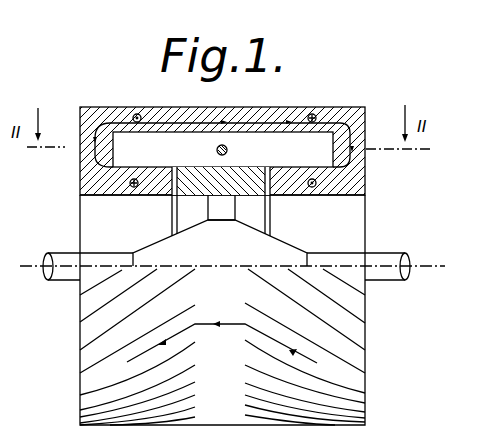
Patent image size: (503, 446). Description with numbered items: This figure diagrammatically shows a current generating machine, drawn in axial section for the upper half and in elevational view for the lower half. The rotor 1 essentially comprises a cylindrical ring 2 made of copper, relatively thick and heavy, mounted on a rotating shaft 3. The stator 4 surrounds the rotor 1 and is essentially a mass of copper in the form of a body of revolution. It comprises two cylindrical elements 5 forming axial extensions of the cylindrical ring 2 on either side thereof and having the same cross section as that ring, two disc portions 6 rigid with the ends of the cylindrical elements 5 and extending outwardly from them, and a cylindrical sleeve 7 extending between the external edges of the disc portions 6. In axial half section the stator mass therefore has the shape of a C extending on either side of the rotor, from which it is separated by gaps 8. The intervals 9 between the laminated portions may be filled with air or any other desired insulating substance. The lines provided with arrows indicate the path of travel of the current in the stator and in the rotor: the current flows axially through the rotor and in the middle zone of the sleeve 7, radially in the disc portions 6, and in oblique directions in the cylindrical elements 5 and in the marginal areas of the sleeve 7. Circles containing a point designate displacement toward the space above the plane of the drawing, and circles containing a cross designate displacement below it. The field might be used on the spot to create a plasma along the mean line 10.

The rotor 1 is at (276, 246).
The cylindrical ring 2 is at (263, 168).
The rotating shaft 3 is at (388, 257).
The stator 4 is at (352, 360).
The cylindrical elements 5 is at (113, 193).
The disc portions 6 is at (366, 133).
The cylindrical sleeve 7 is at (299, 117).
The gaps 8 is at (174, 176).
The intervals 9 is at (348, 315).
The mean line 10 is at (228, 149).